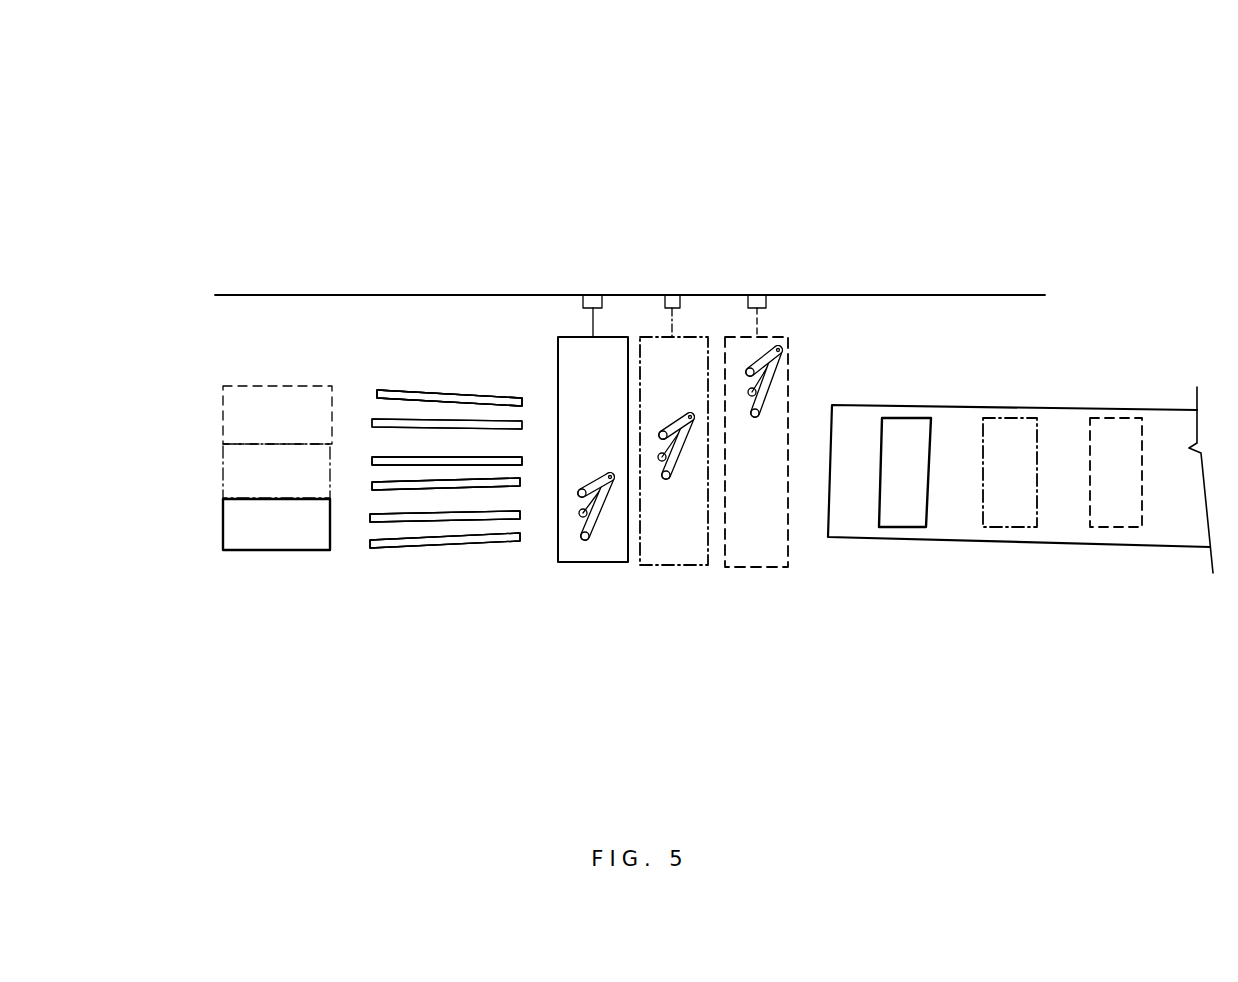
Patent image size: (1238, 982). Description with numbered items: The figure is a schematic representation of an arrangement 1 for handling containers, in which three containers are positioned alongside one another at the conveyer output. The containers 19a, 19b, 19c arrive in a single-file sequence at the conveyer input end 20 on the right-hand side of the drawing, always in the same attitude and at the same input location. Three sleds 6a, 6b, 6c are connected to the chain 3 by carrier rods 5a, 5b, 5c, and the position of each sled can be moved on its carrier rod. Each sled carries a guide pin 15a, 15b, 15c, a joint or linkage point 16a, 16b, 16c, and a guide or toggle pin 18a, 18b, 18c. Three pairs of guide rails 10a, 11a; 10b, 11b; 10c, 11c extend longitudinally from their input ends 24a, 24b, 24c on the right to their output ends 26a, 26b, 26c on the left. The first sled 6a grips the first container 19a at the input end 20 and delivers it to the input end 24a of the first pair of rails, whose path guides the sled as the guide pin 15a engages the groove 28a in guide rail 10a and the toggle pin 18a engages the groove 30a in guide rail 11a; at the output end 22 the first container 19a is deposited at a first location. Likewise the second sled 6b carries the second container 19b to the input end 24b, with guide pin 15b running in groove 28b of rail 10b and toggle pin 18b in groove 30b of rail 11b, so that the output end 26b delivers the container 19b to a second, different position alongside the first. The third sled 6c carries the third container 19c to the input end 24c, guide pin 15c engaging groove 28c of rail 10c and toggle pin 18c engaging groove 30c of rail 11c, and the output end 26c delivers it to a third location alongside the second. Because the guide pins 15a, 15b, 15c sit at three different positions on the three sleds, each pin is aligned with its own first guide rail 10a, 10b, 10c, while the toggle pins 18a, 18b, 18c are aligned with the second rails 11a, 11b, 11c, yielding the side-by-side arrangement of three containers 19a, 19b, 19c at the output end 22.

The arrangement 1 is at (957, 282).
The chain 3 is at (878, 295).
The carrier rod 5a is at (593, 328).
The carrier rod 5b is at (672, 330).
The carrier rod 5c is at (755, 330).
The first sled 6a is at (607, 550).
The second sled 6b is at (690, 550).
The third sled 6c is at (772, 553).
The guide rail 10a is at (384, 518).
The guide rail 10b is at (447, 333).
The guide rail 10c is at (490, 395).
The guide rail 11a is at (452, 538).
The guide rail 11b is at (416, 368).
The guide rail 11c is at (447, 339).
The guide pin 15a is at (583, 559).
The guide pin 15b is at (668, 530).
The guide pin 15c is at (757, 495).
The joint point 16a is at (568, 576).
The joint point 16b is at (656, 546).
The joint point 16c is at (748, 511).
The toggle pin 18a is at (606, 591).
The toggle pin 18b is at (689, 561).
The toggle pin 18c is at (782, 528).
The first container 19a is at (242, 522).
The second container 19b is at (238, 480).
The third container 19c is at (243, 400).
The conveyer input end 20 is at (810, 527).
The output end 22 is at (345, 532).
The input end 24a is at (456, 569).
The input end 24b is at (507, 337).
The input end 24c is at (474, 306).
The output end 26a is at (416, 598).
The output end 26b is at (351, 338).
The output end 26c is at (385, 292).
The groove 28a is at (425, 517).
The groove 28b is at (430, 455).
The groove 28c is at (504, 395).
The groove 30a is at (493, 542).
The groove 30b is at (387, 282).
The groove 30c is at (463, 418).